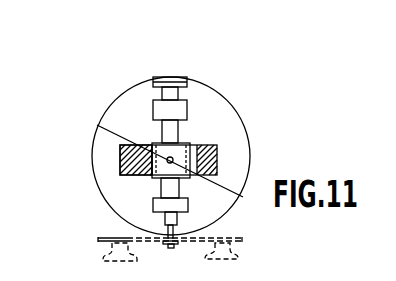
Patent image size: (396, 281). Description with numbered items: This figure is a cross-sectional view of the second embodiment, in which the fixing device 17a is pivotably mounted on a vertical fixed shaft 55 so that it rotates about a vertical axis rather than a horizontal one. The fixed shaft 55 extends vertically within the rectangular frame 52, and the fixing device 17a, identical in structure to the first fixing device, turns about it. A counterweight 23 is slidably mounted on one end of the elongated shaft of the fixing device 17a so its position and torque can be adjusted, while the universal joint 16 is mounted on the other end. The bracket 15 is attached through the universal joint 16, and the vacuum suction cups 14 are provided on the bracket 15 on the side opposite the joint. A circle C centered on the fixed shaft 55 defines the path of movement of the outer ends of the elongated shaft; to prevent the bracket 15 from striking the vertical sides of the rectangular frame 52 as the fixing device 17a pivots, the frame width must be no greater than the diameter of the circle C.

The counterweight 23 is at (183, 77).
The circle C is at (222, 93).
The fixing device 17a is at (186, 143).
The rectangular frame 52 is at (218, 146).
The fixed shaft 55 is at (120, 155).
The universal joint 16 is at (164, 231).
The vacuum suction cups 14 is at (104, 260).
The bracket 15 is at (239, 246).